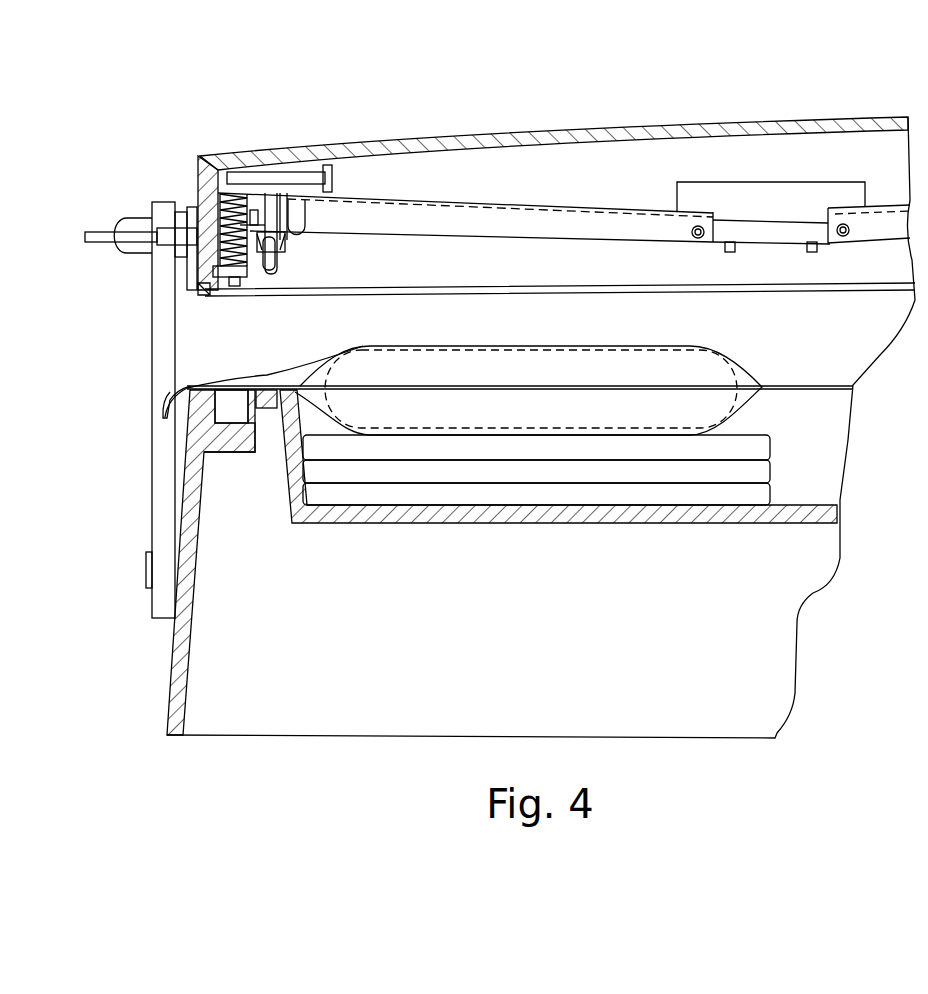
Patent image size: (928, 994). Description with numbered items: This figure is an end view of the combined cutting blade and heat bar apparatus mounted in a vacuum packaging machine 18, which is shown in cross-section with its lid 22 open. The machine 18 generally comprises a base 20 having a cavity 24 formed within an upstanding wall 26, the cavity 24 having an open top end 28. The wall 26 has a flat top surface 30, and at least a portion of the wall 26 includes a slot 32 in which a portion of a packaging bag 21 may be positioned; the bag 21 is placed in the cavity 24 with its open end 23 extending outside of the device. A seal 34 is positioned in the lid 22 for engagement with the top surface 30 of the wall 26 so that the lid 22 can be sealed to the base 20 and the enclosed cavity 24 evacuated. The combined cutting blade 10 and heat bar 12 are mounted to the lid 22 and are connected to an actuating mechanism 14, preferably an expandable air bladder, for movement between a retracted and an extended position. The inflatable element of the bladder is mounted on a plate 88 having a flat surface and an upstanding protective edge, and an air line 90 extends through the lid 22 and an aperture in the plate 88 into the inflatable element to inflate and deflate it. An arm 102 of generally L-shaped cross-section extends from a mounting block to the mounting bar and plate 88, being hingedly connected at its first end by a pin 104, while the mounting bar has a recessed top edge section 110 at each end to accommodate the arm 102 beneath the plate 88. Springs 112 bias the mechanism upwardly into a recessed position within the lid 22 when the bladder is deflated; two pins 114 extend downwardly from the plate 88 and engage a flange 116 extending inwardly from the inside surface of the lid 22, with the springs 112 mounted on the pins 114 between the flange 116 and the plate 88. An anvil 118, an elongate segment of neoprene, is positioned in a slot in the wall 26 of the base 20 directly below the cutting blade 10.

The cutting blade 10 is at (263, 273).
The heat bar 12 is at (281, 266).
The actuating mechanism 14 is at (304, 157).
The vacuum packaging machine 18 is at (818, 112).
The base 20 is at (213, 663).
The packaging bag 21 is at (737, 356).
The lid 22 is at (537, 130).
The open end of the bag 23 is at (162, 414).
The cavity 24 is at (804, 461).
The upstanding wall 26 is at (190, 504).
The open top end 28 is at (216, 367).
The top surface 30 is at (232, 412).
The slot 32 is at (245, 432).
The seal 34 is at (197, 290).
The plate 88 is at (333, 188).
The air line 90 is at (103, 235).
The arm 102 is at (537, 217).
The pin 104 is at (780, 227).
The recessed top edge section 110 is at (697, 239).
The spring 112 is at (223, 212).
The pin 114 is at (233, 287).
The flange 116 is at (217, 278).
The anvil 118 is at (272, 392).